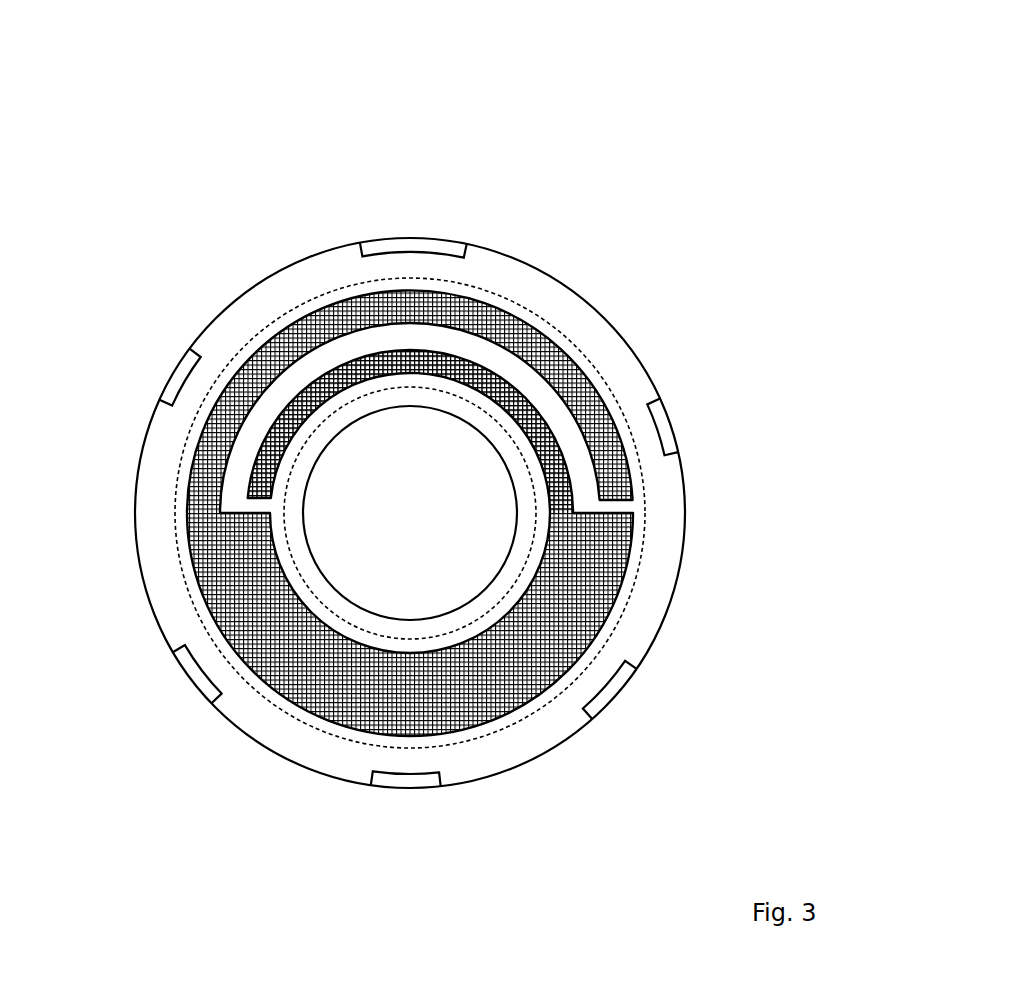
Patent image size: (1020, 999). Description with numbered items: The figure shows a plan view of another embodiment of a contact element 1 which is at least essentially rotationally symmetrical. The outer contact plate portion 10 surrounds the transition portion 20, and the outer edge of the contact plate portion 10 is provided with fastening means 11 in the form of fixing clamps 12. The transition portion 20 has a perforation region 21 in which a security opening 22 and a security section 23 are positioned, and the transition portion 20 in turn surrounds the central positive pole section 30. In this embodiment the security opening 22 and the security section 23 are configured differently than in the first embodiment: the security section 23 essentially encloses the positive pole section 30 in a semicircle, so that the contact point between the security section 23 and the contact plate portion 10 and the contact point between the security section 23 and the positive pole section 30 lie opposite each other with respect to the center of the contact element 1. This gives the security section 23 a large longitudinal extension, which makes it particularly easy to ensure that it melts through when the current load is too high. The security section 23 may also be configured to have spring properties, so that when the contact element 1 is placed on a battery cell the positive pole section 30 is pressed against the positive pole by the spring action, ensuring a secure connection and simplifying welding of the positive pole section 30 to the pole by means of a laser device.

The contact element 1 is at (644, 106).
The contact plate portion 10 is at (240, 297).
The fastening means 11 is at (415, 508).
The fixing clamps 12 is at (410, 240).
The transition portion 20 is at (178, 472).
The perforation region 21 is at (180, 524).
The security opening 22 is at (505, 690).
The security section 23 is at (520, 377).
The positive pole section 30 is at (467, 527).